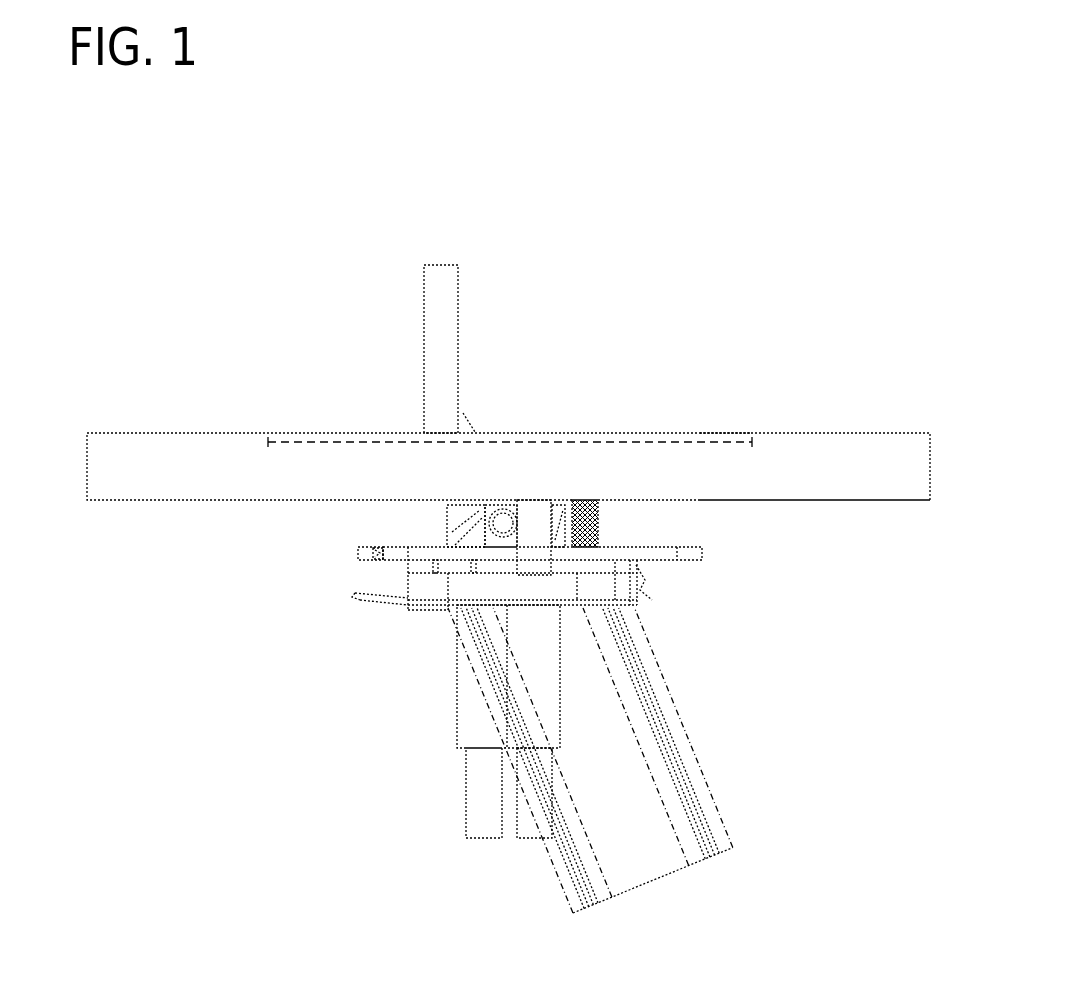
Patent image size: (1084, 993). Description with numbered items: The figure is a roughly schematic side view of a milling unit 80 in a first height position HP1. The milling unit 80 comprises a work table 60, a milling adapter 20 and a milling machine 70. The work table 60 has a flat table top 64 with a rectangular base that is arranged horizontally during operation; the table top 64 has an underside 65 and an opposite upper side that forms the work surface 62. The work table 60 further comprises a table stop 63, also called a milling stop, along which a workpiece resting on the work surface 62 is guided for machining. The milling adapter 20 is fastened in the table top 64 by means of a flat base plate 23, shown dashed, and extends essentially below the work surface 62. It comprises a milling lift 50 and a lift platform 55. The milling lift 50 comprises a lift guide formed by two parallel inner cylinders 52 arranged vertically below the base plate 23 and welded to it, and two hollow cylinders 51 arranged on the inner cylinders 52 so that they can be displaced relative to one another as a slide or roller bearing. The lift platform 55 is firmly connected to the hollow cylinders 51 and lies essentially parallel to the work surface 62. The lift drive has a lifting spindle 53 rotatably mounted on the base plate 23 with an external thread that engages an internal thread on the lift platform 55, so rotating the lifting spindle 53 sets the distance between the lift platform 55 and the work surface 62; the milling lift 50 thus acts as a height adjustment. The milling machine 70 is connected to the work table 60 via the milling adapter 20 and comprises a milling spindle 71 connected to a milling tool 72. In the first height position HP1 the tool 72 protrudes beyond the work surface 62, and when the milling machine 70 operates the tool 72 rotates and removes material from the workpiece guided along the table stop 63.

The milling adapter 20 is at (272, 615).
The base plate 23 is at (528, 435).
The milling lift 50 is at (416, 771).
The hollow cylinders 51 is at (528, 707).
The inner cylinders 52 is at (533, 830).
The lifting spindle 53 is at (590, 510).
The lift platform 55 is at (350, 557).
The work table 60 is at (644, 382).
The work surface 62 is at (866, 432).
The table stop 63 is at (442, 268).
The table top 64 is at (720, 452).
The underside 65 is at (871, 503).
The milling machine 70 is at (646, 782).
The milling spindle 71 is at (662, 865).
The milling tool 72 is at (463, 417).
The milling unit 80 is at (735, 248).
The first height position HP1 is at (712, 556).